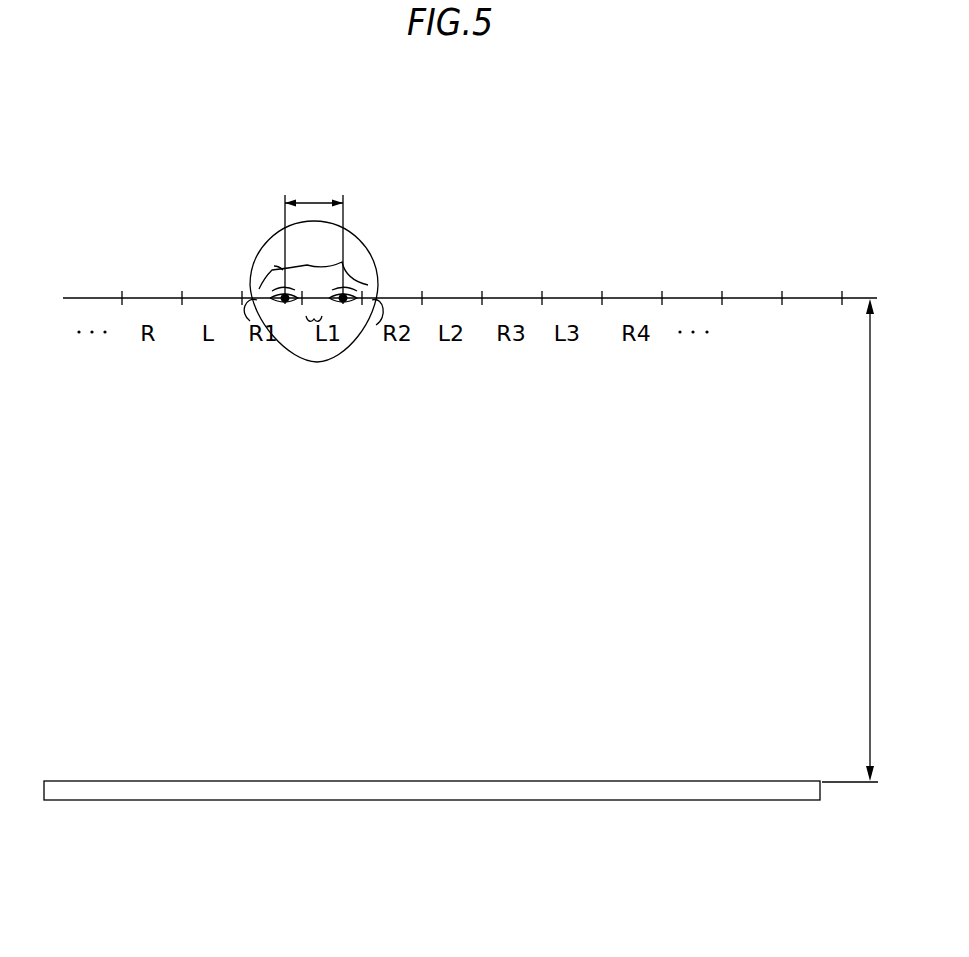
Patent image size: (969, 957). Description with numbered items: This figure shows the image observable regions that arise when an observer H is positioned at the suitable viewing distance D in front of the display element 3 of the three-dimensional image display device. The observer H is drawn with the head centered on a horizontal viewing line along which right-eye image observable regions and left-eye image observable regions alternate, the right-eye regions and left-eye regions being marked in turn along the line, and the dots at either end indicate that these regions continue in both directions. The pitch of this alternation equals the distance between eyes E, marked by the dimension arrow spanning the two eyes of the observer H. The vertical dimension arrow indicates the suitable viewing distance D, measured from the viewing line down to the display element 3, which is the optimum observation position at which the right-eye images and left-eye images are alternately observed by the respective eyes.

The display panel 3 is at (365, 787).
The observer H is at (365, 258).
The distance between eyes E is at (314, 238).
The suitable viewing distance D is at (850, 540).